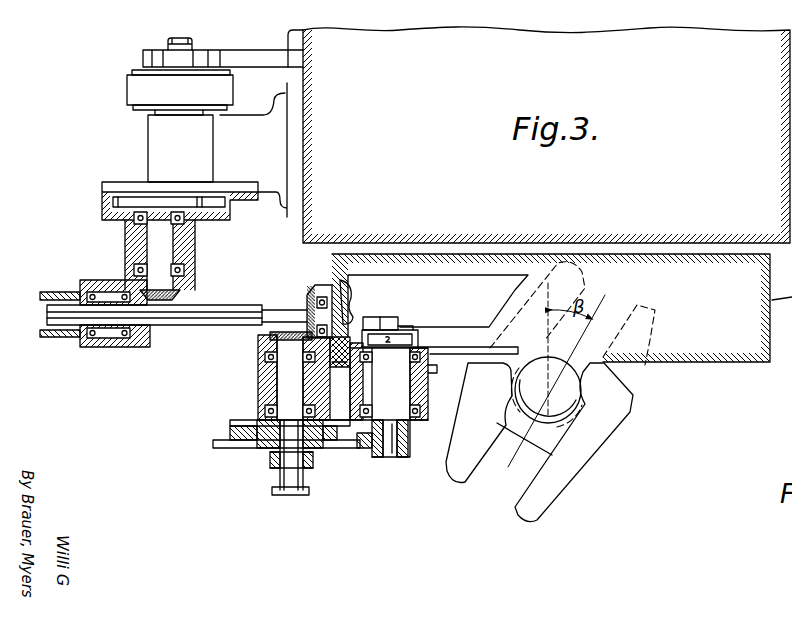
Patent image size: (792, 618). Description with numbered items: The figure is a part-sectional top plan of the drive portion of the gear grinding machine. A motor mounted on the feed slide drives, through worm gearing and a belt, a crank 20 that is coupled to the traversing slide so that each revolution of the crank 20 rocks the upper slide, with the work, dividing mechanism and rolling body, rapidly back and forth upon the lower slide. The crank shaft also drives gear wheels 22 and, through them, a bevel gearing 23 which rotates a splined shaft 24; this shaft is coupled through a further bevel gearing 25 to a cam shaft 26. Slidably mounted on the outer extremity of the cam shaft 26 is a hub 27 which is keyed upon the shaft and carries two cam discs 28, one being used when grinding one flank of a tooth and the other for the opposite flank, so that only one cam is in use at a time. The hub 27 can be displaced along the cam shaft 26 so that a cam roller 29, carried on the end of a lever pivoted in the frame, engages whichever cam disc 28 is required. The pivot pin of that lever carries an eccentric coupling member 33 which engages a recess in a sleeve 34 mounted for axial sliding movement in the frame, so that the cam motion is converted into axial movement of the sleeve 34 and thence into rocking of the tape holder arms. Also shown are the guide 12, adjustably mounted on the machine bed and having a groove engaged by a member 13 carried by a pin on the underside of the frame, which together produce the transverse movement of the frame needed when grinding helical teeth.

The guide 12 is at (592, 452).
The member 13 is at (551, 382).
The crank 20 is at (128, 71).
The gear wheels 22 is at (130, 200).
The bevel gearing 23 is at (135, 337).
The splined shaft 24 is at (229, 305).
The bevel gearing 25 is at (312, 298).
The cam shaft 26 is at (287, 378).
The hub 27 is at (276, 447).
The cam discs 28 is at (217, 440).
The cam roller 29 is at (374, 448).
The coupling member 33 is at (393, 322).
The sleeve 34 is at (437, 326).